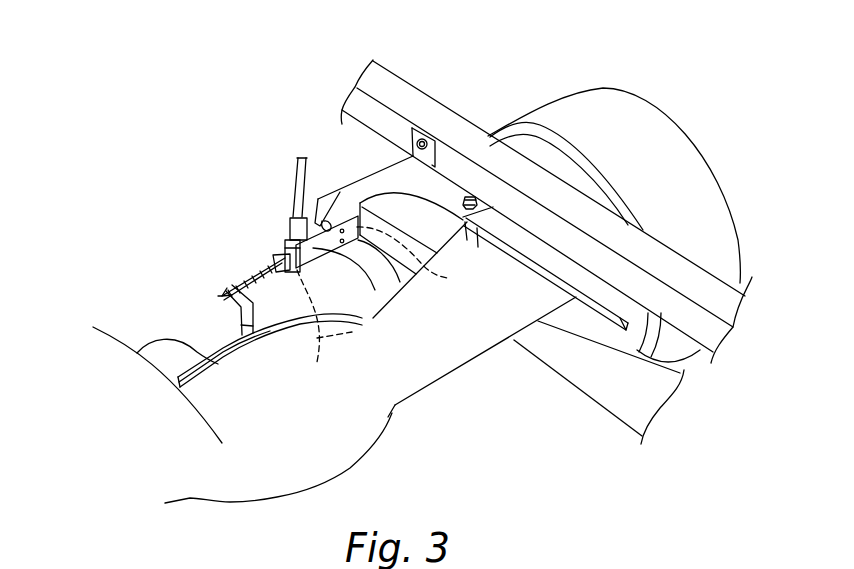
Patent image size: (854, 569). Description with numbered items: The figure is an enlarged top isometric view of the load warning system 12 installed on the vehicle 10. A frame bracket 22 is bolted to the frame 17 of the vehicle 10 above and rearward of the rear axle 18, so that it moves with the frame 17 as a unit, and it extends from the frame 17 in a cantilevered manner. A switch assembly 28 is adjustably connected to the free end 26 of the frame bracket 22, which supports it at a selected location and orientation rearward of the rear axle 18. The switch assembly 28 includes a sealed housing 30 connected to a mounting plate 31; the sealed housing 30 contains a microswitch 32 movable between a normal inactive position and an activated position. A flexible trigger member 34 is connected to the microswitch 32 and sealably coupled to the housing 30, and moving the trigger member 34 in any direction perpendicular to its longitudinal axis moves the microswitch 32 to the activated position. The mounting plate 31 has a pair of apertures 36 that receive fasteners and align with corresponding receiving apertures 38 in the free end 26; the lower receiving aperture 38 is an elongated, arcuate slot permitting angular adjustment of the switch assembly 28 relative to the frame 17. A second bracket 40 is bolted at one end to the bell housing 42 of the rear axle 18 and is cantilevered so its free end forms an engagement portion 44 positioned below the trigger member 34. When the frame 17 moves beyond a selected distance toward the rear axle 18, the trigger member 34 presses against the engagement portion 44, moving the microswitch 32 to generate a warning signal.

The vehicle 10 is at (326, 100).
The load warning system 12 is at (386, 140).
The frame 17 is at (480, 142).
The rear axle 18 is at (486, 312).
The frame bracket 22 is at (434, 182).
The free end 26 is at (337, 192).
The switch assembly 28 is at (318, 232).
The sealed housing 30 is at (287, 247).
The mounting plate 31 is at (375, 290).
The microswitch 32 is at (324, 328).
The trigger member 34 is at (224, 292).
The apertures 36 is at (400, 282).
The receiving apertures 38 is at (450, 278).
The second bracket 40 is at (137, 353).
The bell housing 42 is at (218, 364).
The engagement portion 44 is at (233, 308).